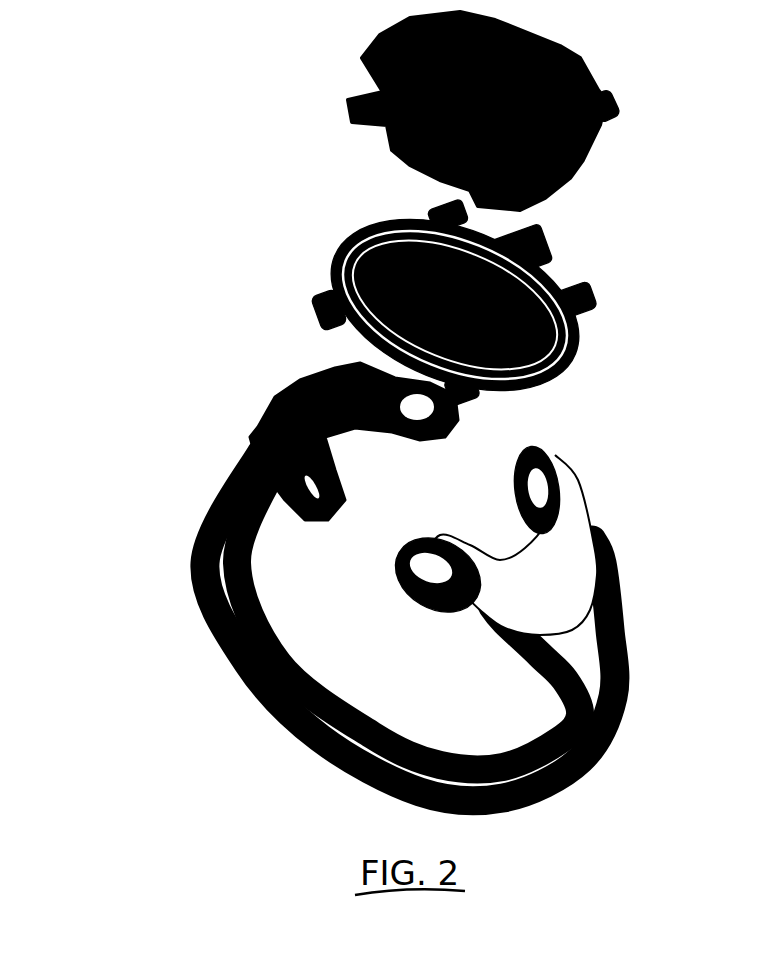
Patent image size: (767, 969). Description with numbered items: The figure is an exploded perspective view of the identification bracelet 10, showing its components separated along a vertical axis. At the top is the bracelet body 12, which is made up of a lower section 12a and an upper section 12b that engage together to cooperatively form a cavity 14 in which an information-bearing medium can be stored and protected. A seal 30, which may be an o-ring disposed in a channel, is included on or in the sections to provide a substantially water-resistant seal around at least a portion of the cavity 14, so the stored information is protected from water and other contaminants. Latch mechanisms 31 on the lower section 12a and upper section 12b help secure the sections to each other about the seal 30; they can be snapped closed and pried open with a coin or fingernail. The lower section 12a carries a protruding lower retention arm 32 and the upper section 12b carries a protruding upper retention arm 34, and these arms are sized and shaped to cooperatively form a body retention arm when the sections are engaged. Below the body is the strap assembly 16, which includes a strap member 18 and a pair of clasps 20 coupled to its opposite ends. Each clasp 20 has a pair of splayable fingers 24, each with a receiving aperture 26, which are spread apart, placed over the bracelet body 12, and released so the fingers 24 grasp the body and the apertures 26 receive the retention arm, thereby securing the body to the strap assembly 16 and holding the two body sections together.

The identification bracelet 10 is at (167, 283).
The bracelet body 12 is at (340, 172).
The lower section 12a is at (340, 250).
The upper section 12b is at (397, 40).
The cavity 14 is at (545, 283).
The strap assembly 16 is at (648, 601).
The strap member 18 is at (190, 533).
The clasp 20 is at (270, 410).
The splayable finger 24 is at (548, 450).
The receiving aperture 26 is at (415, 590).
The seal 30 is at (580, 353).
The latch mechanism 31 is at (540, 243).
The lower retention arm 32 is at (593, 303).
The upper retention arm 34 is at (620, 103).